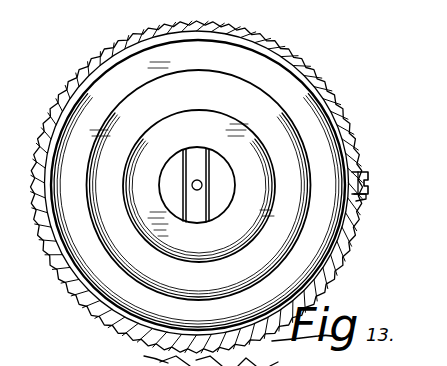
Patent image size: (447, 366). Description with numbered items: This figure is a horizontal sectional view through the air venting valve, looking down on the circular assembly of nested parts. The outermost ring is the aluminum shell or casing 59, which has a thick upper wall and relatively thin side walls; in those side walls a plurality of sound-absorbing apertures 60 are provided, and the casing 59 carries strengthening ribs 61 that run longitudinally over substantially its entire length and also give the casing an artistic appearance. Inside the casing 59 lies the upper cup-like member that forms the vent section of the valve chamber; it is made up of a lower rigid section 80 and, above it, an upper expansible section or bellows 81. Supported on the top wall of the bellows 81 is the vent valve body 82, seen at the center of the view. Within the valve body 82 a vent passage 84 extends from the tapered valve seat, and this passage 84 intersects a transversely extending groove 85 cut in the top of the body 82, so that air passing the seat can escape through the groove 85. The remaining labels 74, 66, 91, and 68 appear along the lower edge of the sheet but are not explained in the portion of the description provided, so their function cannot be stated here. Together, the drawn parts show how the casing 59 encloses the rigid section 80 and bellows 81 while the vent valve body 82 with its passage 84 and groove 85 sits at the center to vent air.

The aluminum shell or casing 59 is at (349, 128).
The sound-absorbing apertures 60 is at (362, 194).
The strengthening ribs 61 is at (362, 168).
The lower rigid section 80 is at (271, 72).
The upper expansible section or bellows 81 is at (271, 117).
The valve body 82 is at (232, 178).
The vent passage 84 is at (200, 181).
The transversely extending groove 85 is at (202, 223).
The bracket 74 is at (169, 354).
The bracket arm 66 is at (250, 358).
The support 91 is at (282, 362).
The support member 68 is at (99, 362).